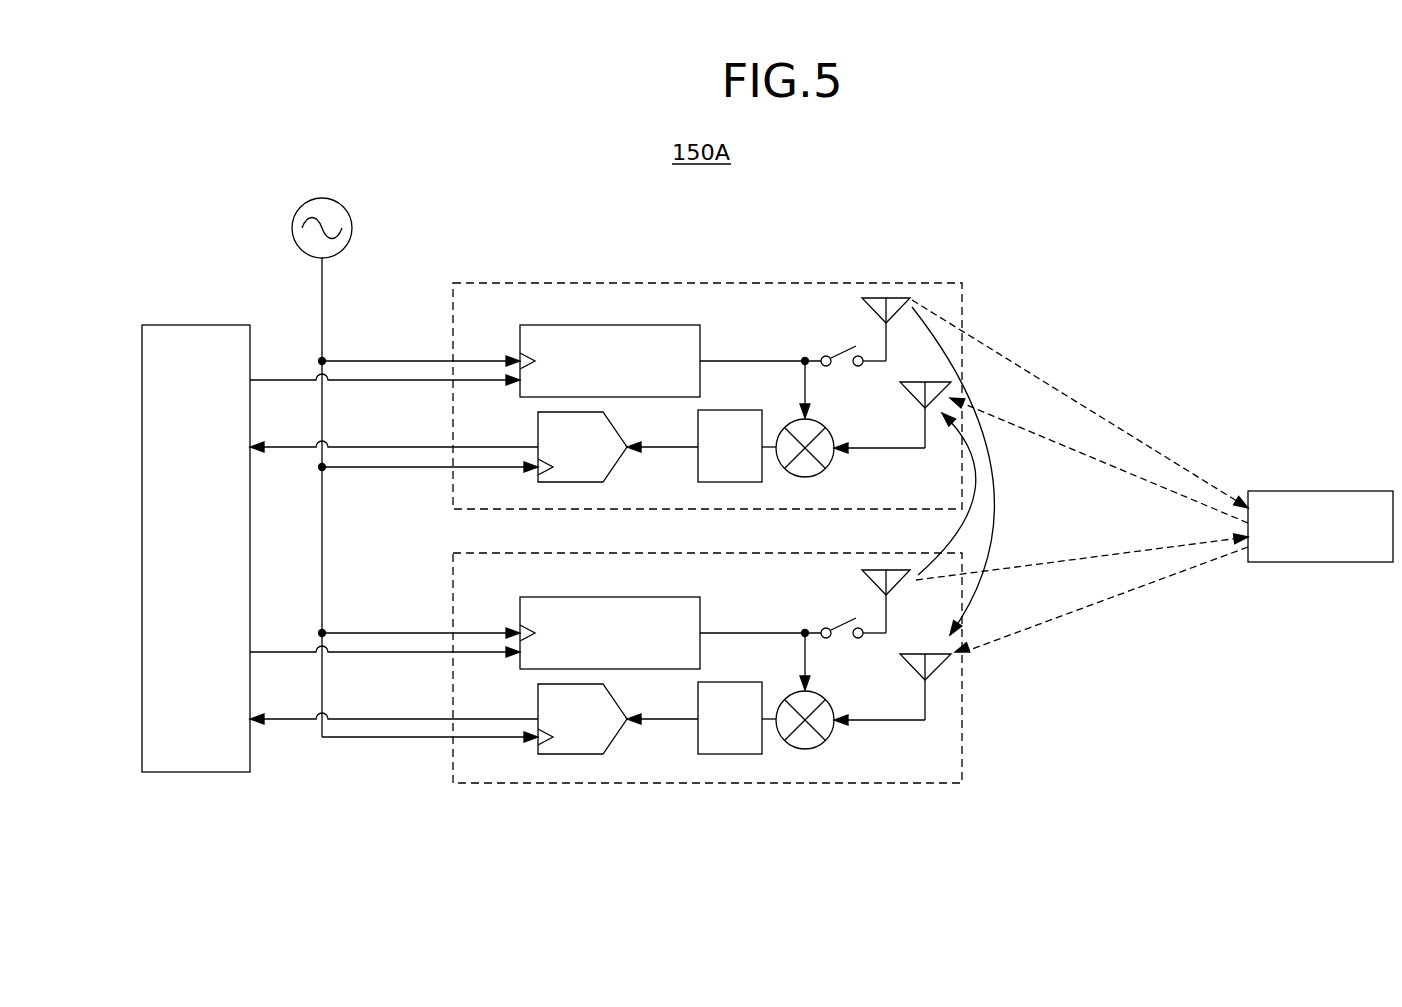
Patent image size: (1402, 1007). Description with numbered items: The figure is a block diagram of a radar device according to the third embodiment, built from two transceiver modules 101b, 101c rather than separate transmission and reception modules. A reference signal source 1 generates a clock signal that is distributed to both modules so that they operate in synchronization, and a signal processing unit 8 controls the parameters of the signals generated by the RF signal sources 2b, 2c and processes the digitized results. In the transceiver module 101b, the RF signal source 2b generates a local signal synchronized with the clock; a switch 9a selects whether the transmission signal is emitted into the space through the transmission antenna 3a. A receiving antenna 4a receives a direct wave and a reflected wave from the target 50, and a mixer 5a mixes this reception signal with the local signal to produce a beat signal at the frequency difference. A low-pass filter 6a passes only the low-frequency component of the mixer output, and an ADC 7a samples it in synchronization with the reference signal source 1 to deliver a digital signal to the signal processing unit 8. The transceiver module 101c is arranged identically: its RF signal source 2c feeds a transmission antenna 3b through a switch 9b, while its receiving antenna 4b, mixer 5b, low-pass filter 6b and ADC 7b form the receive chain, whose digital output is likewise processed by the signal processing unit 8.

The reference signal source 1 is at (322, 198).
The signal processing unit 8 is at (196, 325).
The RF signal source 2b is at (592, 325).
The RF signal source 2c is at (592, 597).
The analog-to-digital converter 7a is at (615, 421).
The analog-to-digital converter 7b is at (615, 693).
The low-pass filter 6a is at (720, 410).
The low-pass filter 6b is at (720, 682).
The mixer 5a is at (820, 424).
The mixer 5b is at (820, 696).
The transmission antenna 3a is at (868, 310).
The transmission antenna 3b is at (868, 582).
The switch 9a is at (836, 354).
The switch 9b is at (836, 626).
The receiving antenna 4a is at (928, 386).
The receiving antenna 4b is at (928, 658).
The transceiver module 101b is at (855, 283).
The transceiver module 101c is at (855, 555).
The target 50 is at (1315, 491).